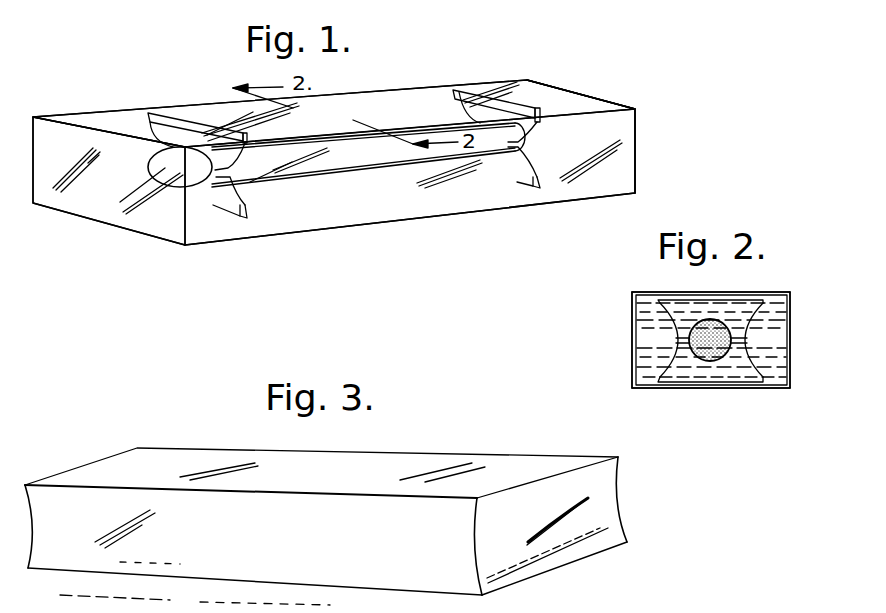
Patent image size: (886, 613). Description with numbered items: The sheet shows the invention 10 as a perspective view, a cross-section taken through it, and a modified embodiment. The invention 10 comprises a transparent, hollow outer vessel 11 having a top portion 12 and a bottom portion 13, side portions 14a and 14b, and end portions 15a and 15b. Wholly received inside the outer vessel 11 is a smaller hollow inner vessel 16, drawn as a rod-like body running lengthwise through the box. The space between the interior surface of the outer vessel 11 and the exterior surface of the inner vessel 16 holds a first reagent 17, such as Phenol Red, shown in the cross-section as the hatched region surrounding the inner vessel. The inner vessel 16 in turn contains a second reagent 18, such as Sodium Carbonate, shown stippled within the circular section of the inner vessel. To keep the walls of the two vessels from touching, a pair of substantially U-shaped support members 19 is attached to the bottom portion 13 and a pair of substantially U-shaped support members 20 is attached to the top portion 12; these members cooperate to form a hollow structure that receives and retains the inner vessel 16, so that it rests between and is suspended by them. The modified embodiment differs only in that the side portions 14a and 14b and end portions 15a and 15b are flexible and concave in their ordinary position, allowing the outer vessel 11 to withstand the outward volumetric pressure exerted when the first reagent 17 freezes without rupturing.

In FIG. 1, the invention 10 is at (571, 75).
In FIG. 1, the outer vessel 11 is at (593, 105).
In FIG. 2, the outer vessel 11 is at (711, 340).
In FIG. 1, the top portion 12 is at (387, 102).
In FIG. 2, the top portion 12 is at (757, 293).
In FIG. 1, the bottom portion 13 is at (383, 223).
In FIG. 2, the bottom portion 13 is at (713, 388).
In FIG. 2, the side portion 14a is at (632, 338).
In FIG. 2, the side portion 14b is at (790, 357).
In FIG. 1, the end portion 15a is at (147, 223).
In FIG. 1, the end portion 15b is at (637, 147).
In FIG. 1, the inner vessel 16 is at (333, 160).
In FIG. 2, the first reagent 17 is at (648, 352).
In FIG. 2, the second reagent 18 is at (715, 333).
In FIG. 1, the support member 19 is at (215, 207).
In FIG. 2, the support member 19 is at (687, 375).
In FIG. 1, the support member 20 is at (177, 130).
In FIG. 2, the support member 20 is at (660, 310).